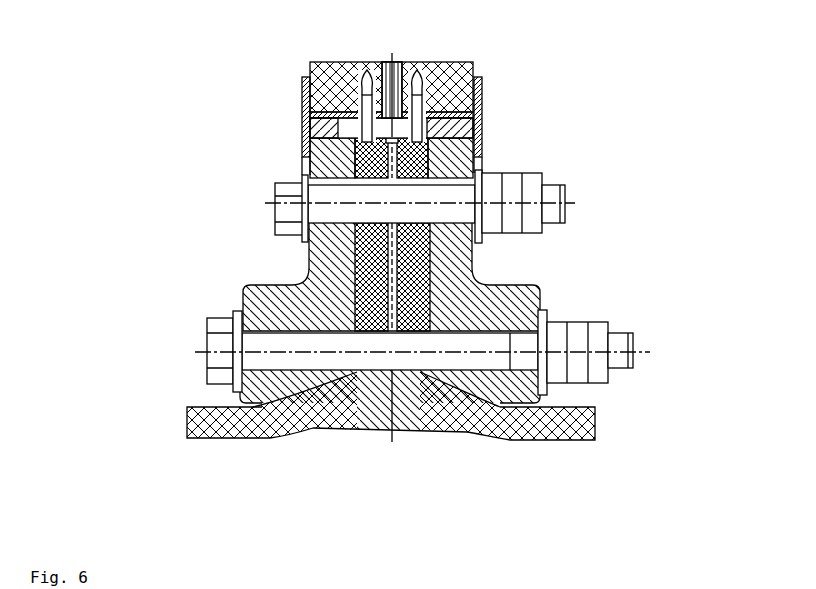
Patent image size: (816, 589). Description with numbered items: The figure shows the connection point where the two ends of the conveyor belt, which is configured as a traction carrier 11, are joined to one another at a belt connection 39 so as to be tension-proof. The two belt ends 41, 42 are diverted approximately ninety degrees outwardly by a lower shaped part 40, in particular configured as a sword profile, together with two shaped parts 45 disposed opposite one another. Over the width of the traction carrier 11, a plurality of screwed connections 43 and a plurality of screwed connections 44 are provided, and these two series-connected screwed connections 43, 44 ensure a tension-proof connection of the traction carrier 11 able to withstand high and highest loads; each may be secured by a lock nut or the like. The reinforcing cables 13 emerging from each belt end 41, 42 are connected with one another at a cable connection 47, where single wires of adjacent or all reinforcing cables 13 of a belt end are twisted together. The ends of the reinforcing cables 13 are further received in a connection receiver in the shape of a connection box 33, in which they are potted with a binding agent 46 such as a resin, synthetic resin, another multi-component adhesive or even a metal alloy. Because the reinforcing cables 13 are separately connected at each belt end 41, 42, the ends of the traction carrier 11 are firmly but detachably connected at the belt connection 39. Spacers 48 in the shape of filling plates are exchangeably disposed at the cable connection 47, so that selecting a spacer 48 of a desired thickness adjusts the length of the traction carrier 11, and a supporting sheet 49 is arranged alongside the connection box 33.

The traction carrier 11 is at (218, 437).
The reinforcing cable 13 is at (481, 134).
The connection box 33 is at (310, 70).
The belt connection 39 is at (408, 455).
The shaped part 40 is at (352, 425).
The belt end 41 is at (325, 163).
The belt end 42 is at (422, 165).
The screwed connection 43 is at (595, 212).
The screwed connection 44 is at (640, 338).
The shaped part 45 is at (243, 288).
The binding agent 46 is at (430, 62).
The cable connection 47 is at (492, 108).
The spacer 48 is at (307, 123).
The supporting sheet 49 is at (307, 93).